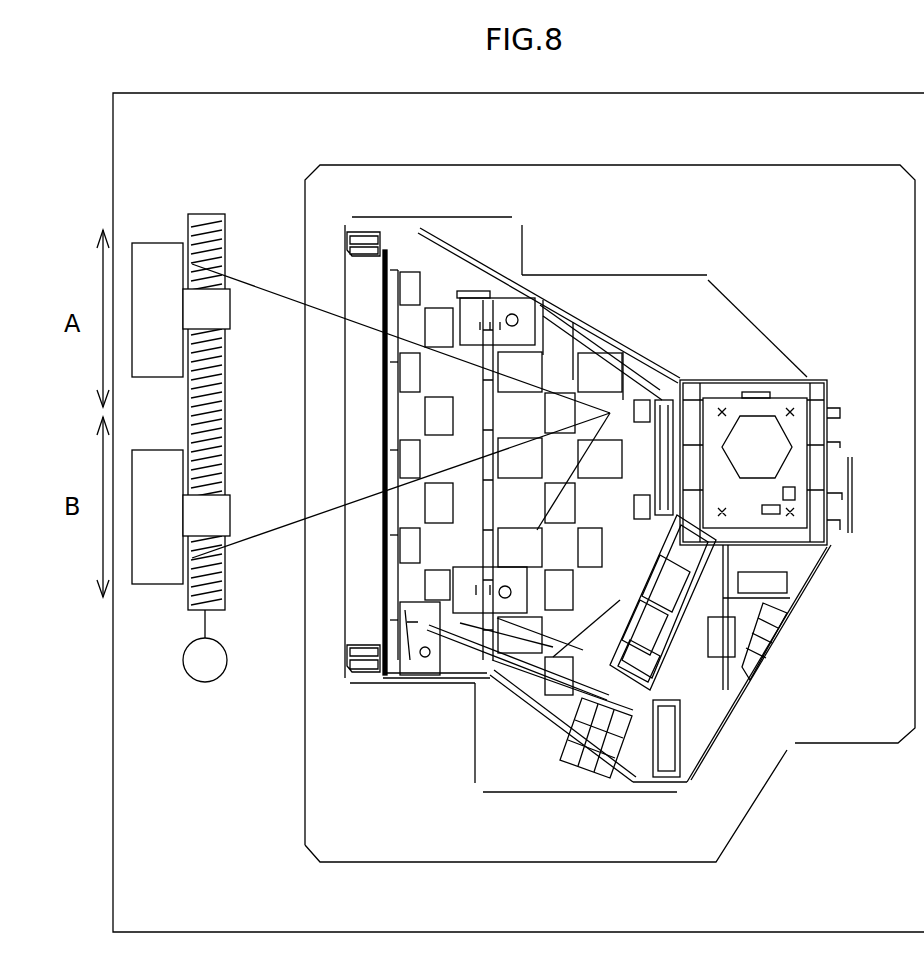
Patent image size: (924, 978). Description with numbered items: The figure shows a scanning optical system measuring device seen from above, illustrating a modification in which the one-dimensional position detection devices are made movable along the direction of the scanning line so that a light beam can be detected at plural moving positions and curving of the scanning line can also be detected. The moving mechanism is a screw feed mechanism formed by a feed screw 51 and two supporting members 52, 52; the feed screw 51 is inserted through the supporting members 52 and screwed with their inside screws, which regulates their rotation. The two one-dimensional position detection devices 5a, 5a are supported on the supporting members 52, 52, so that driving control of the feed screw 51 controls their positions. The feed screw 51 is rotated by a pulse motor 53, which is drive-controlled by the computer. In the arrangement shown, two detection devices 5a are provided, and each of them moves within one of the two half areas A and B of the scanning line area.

The one-dimensional position detection device 5a is at (188, 345).
The feed screw 51 is at (227, 402).
The supporting member 52 is at (231, 305).
The pulse motor 53 is at (205, 682).